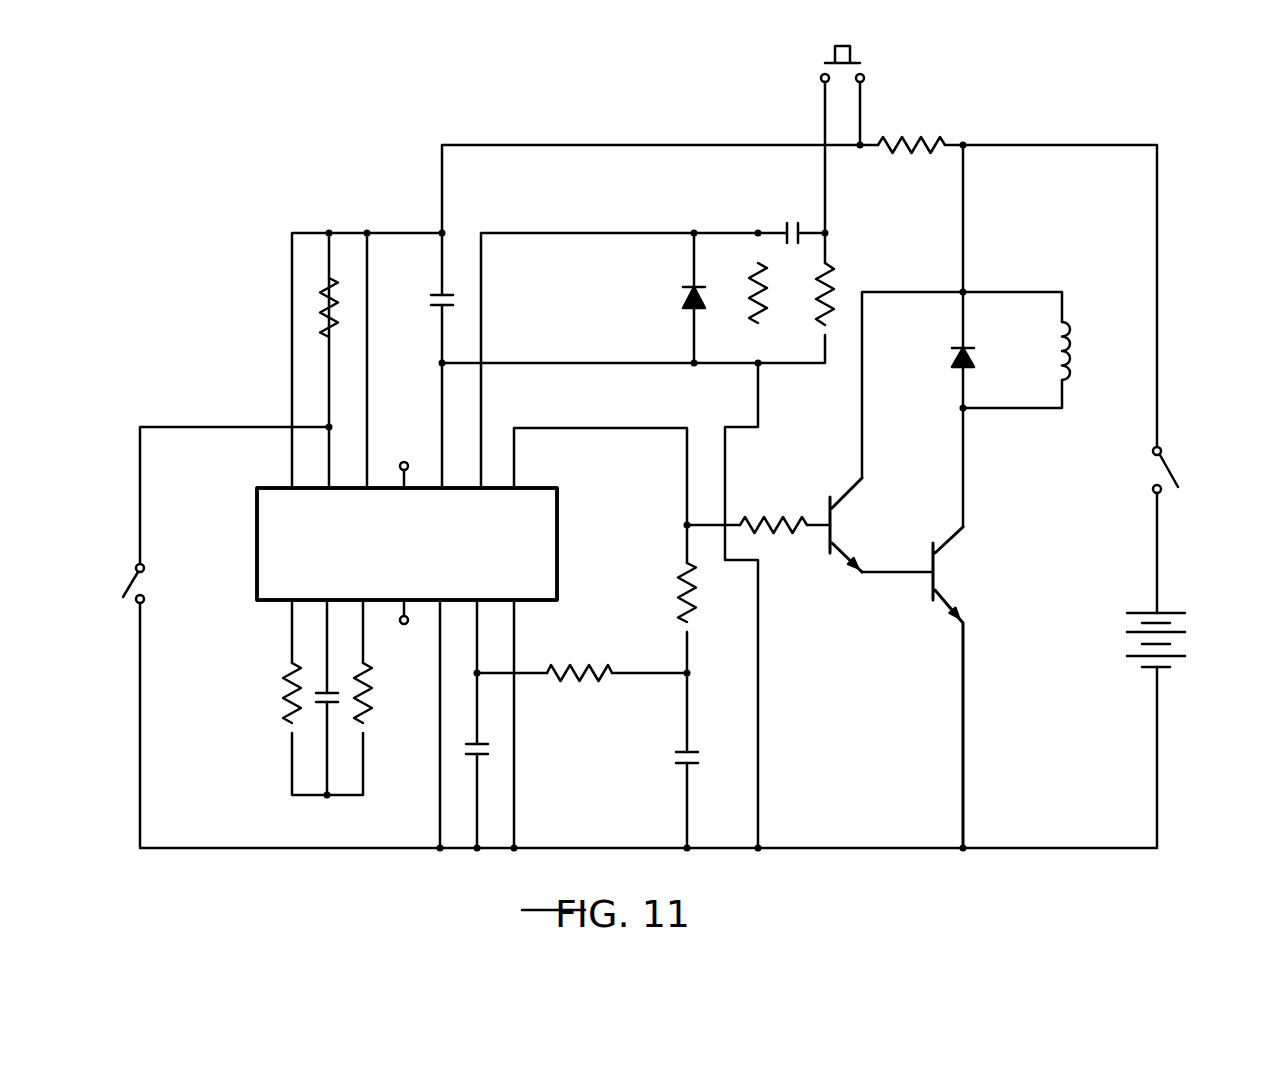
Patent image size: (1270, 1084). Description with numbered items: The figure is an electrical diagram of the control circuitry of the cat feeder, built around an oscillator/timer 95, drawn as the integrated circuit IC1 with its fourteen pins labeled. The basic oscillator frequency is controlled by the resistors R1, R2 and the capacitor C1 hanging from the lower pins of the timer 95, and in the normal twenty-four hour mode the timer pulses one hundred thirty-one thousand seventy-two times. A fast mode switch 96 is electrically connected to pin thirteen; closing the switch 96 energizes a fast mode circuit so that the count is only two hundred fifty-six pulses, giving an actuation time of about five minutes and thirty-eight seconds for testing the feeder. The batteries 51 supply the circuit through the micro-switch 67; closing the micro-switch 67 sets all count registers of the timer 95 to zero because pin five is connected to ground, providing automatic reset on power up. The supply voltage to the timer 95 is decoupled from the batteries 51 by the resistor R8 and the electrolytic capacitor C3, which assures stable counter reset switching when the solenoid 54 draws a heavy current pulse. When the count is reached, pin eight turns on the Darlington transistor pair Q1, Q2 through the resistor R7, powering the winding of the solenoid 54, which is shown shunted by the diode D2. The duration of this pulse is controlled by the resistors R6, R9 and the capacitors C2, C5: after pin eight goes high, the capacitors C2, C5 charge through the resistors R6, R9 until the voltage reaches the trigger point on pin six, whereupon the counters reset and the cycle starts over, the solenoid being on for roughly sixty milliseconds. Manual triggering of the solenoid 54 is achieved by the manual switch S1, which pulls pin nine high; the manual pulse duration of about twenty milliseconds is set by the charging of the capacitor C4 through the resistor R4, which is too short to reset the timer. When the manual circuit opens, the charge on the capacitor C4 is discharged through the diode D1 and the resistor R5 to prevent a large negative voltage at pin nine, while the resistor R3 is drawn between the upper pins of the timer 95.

The oscillator/timer 95 is at (382, 551).
The integrated circuit IC1 is at (558, 500).
The resistor R1 is at (288, 690).
The resistor R2 is at (372, 727).
The resistor R3 is at (323, 310).
The resistor R4 is at (753, 292).
The resistor R5 is at (831, 283).
The resistor R6 is at (580, 664).
The resistor R7 is at (774, 518).
The resistor R8 is at (917, 144).
The resistor R9 is at (682, 578).
The capacitor C1 is at (330, 690).
The capacitor C2 is at (484, 768).
The electrolytic capacitor C3 is at (430, 292).
The capacitor C4 is at (786, 230).
The capacitor C5 is at (684, 768).
The diode D1 is at (680, 300).
The diode D2 is at (950, 356).
The Darlington transistor Q1 is at (842, 514).
The Darlington transistor Q2 is at (946, 568).
The manual switch S1 is at (827, 62).
The solenoid 54 is at (1077, 332).
The micro-switch 67 is at (1170, 473).
The batteries 51 is at (1181, 612).
The fast mode switch 96 is at (128, 580).